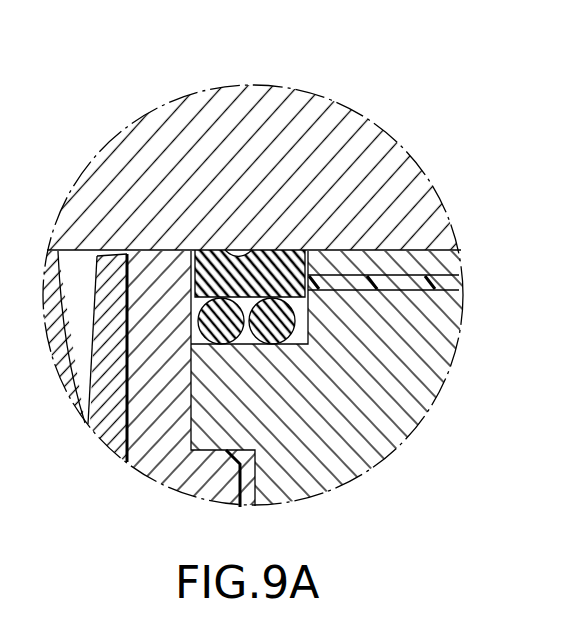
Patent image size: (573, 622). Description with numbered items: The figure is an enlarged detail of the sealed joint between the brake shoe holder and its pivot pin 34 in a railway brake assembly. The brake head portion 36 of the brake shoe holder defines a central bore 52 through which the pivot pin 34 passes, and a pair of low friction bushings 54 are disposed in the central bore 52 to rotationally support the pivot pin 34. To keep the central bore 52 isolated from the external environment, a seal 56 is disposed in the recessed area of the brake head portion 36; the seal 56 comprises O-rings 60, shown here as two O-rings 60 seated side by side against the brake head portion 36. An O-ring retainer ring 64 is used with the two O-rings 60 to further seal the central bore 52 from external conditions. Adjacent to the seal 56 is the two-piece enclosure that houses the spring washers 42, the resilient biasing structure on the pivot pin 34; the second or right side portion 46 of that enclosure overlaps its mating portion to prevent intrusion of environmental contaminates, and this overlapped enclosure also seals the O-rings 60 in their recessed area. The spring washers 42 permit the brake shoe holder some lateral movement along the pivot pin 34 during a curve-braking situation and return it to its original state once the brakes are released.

The pivot pin 34 is at (402, 188).
The brake head portion 36 is at (402, 418).
The spring washers 42 is at (96, 426).
The second or right side portion 46 is at (160, 457).
The central bore 52 is at (367, 292).
The low friction bushings 54 is at (469, 251).
The seals 56 is at (276, 232).
The O-rings 60 is at (288, 350).
The O-ring retainer ring 64 is at (312, 238).